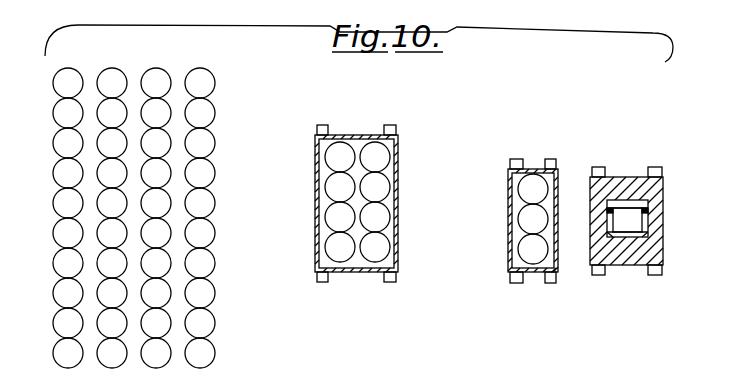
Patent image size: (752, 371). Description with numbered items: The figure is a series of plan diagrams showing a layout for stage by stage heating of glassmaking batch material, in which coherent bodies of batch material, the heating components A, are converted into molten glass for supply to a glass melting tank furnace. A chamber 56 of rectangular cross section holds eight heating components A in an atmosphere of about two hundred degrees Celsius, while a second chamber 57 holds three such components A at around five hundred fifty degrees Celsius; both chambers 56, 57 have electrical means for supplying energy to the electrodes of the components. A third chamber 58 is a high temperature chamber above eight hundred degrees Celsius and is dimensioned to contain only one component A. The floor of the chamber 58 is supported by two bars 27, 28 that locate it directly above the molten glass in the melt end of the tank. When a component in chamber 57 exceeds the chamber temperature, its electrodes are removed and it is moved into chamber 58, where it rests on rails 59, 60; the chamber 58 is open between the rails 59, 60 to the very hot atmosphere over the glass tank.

The heating component A is at (70, 82).
The bar 27 is at (323, 125).
The bar 28 is at (390, 125).
The chamber 56 is at (358, 273).
The second chamber 57 is at (535, 273).
The third chamber 58 is at (650, 251).
The rail 59 is at (645, 206).
The rail 60 is at (612, 234).